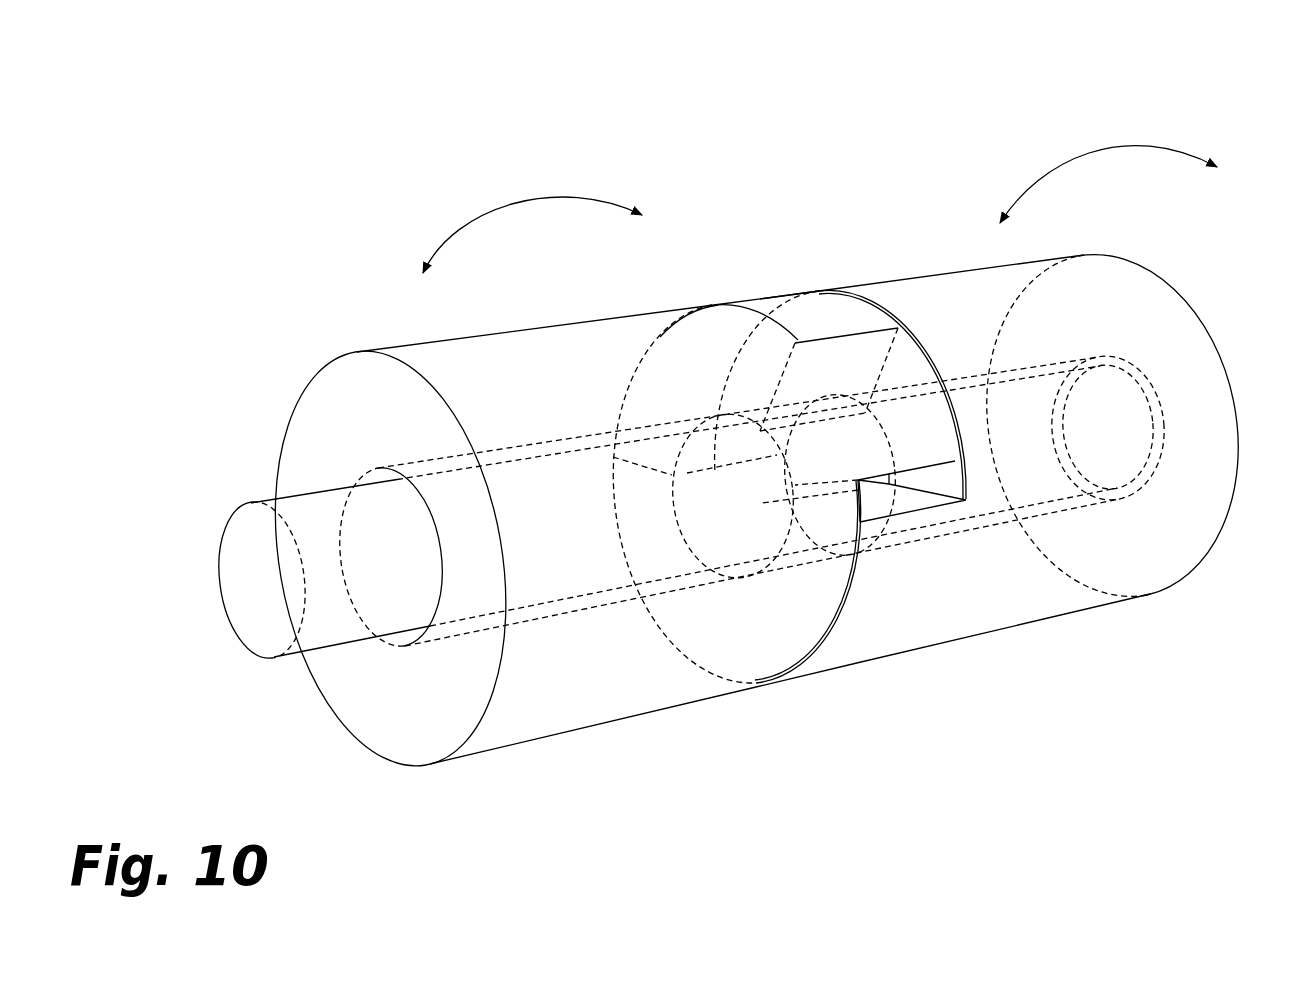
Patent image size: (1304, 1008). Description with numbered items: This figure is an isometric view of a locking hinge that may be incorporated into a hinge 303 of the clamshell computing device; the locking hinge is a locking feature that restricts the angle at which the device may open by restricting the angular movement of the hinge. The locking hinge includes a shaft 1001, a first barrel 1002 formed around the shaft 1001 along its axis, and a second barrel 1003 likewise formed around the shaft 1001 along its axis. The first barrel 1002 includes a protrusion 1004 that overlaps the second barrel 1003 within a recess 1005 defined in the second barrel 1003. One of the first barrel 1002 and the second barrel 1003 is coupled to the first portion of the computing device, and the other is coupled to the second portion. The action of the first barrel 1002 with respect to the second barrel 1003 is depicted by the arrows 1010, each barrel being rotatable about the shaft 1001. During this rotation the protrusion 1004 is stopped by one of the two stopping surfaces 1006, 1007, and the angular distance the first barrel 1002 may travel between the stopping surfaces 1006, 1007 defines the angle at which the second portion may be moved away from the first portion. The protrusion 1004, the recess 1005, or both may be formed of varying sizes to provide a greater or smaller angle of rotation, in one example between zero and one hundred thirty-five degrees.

The hinge 303 is at (247, 160).
The shaft 1001 is at (300, 550).
The first barrel 1002 is at (454, 375).
The second barrel 1003 is at (983, 317).
The protrusion 1004 is at (827, 375).
The recess 1005 is at (838, 313).
The stopping surface 1006 is at (885, 502).
The stopping surface 1007 is at (663, 460).
The arrows 1010 is at (525, 197).